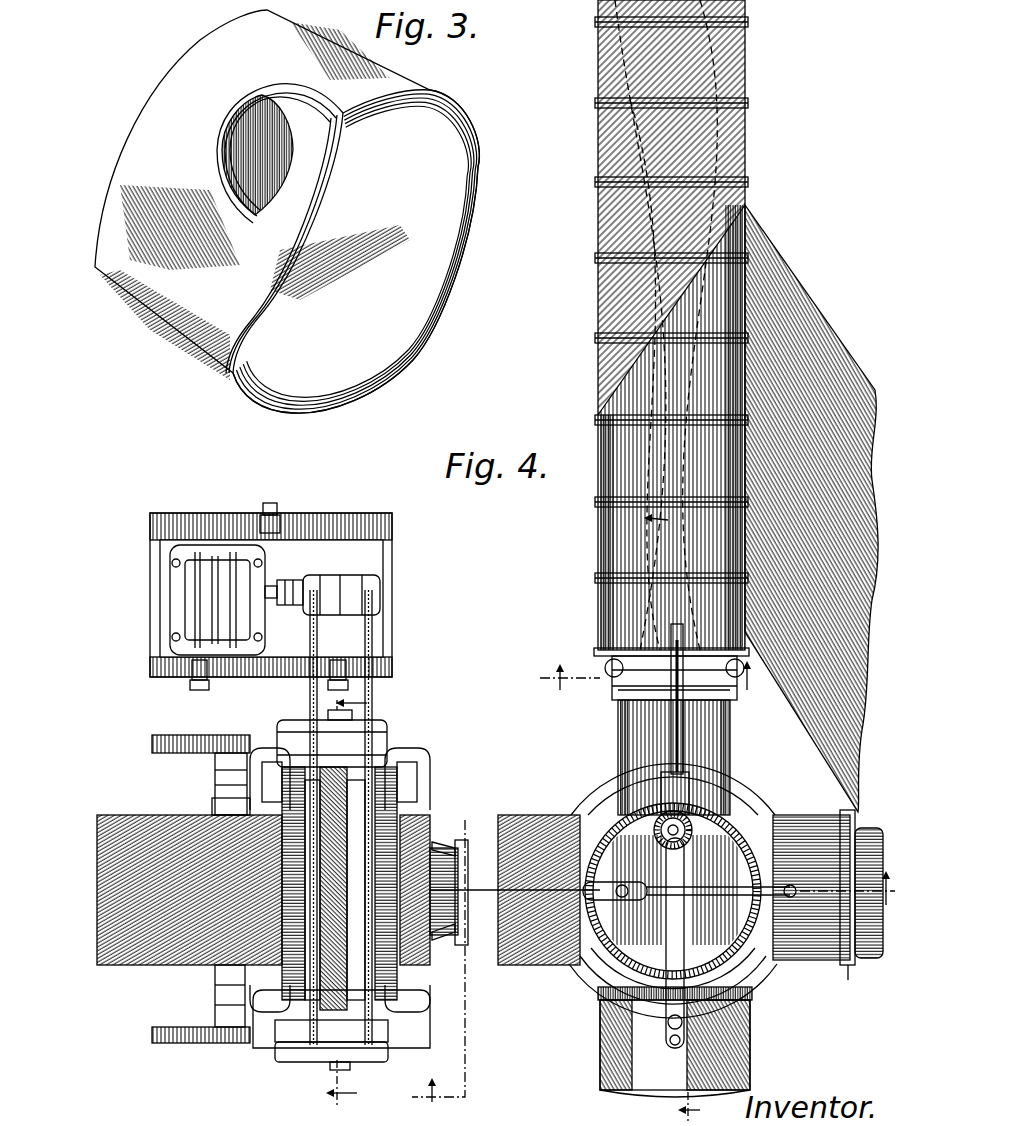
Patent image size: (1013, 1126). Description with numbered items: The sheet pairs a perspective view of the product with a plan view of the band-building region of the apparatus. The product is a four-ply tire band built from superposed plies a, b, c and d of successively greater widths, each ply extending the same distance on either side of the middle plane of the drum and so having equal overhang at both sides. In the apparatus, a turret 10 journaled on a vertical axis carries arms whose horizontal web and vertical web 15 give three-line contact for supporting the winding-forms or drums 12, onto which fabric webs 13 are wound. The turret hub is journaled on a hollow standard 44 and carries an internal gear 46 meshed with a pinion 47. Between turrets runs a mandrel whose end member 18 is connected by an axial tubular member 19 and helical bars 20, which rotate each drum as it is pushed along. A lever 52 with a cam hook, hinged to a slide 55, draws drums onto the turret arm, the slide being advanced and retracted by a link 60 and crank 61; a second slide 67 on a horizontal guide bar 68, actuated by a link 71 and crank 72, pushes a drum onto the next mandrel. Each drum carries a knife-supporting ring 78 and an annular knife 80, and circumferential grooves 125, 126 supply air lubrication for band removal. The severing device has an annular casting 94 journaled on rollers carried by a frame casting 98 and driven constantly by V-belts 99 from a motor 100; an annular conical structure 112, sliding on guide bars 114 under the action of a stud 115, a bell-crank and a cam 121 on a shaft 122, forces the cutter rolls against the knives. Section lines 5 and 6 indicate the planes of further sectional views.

In FIG. 3, the ply a is at (282, 162).
In FIG. 4, the ply a is at (160, 966).
In FIG. 3, the ply b is at (268, 180).
In FIG. 3, the ply c is at (250, 217).
In FIG. 3, the ply d is at (228, 267).
In FIG. 4, the section line 5 is at (679, 815).
In FIG. 4, the section line 6 is at (654, 972).
In FIG. 4, the turret 10 is at (596, 825).
In FIG. 4, the winding-form or drum 12 is at (745, 300).
In FIG. 4, the fabric web 13 is at (848, 348).
In FIG. 4, the vertical web 15 is at (612, 897).
In FIG. 4, the end member 18 is at (622, 692).
In FIG. 4, the axial tubular member 19 is at (665, 660).
In FIG. 4, the helical bar 20 is at (625, 668).
In FIG. 4, the standard 44 is at (622, 712).
In FIG. 4, the internal gear 46 is at (700, 828).
In FIG. 4, the pinion 47 is at (625, 800).
In FIG. 4, the lever 52 is at (596, 875).
In FIG. 4, the slide 55 is at (590, 960).
In FIG. 4, the link 60 is at (785, 891).
In FIG. 4, the crank 61 is at (778, 874).
In FIG. 4, the slide 67 is at (690, 786).
In FIG. 4, the horizontal guide bar 68 is at (682, 722).
In FIG. 4, the link 71 is at (667, 1022).
In FIG. 4, the crank 72 is at (665, 998).
In FIG. 4, the knife-supporting ring 78 is at (605, 1005).
In FIG. 4, the annular knife 80 is at (760, 815).
In FIG. 4, the annular casting 94 is at (402, 782).
In FIG. 4, the annular frame casting 98 is at (240, 800).
In FIG. 4, the V-belt 99 is at (310, 700).
In FIG. 4, the motor 100 is at (185, 578).
In FIG. 4, the annular structure 112 is at (333, 850).
In FIG. 4, the horizontal guide bar 114 is at (395, 742).
In FIG. 4, the stud 115 is at (322, 1062).
In FIG. 4, the cam 121 is at (170, 740).
In FIG. 4, the shaft 122 is at (225, 806).
In FIG. 4, the circumferential groove 125 is at (833, 980).
In FIG. 4, the circumferential groove 126 is at (850, 975).